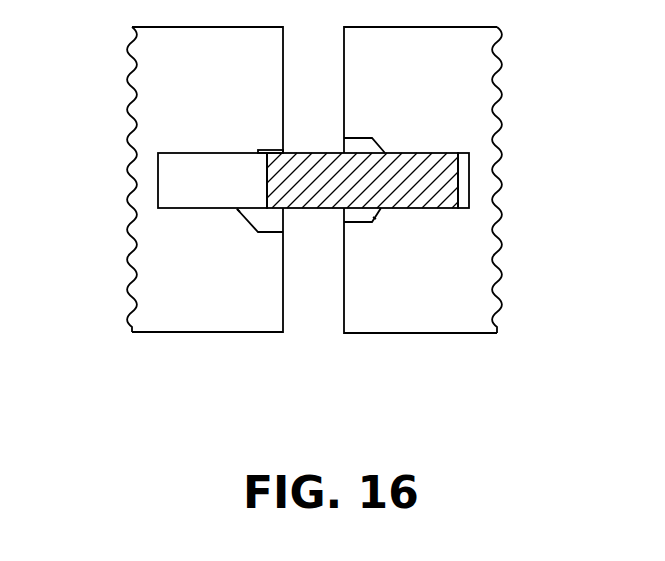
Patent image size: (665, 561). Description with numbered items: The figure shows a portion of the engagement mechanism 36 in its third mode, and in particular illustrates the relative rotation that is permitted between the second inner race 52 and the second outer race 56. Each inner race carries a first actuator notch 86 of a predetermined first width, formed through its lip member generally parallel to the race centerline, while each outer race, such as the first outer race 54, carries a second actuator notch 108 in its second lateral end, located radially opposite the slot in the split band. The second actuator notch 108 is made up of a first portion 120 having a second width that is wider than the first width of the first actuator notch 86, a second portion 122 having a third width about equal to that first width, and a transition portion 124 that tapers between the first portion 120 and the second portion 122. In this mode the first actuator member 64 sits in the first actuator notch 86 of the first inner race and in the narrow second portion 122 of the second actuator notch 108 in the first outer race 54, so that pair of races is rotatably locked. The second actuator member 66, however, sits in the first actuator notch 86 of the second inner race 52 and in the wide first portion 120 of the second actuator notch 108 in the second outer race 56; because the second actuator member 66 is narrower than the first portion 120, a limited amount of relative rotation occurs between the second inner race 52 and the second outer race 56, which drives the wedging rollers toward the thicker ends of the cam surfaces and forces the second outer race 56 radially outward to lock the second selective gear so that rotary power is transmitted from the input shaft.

The engagement mechanism 36 is at (317, 205).
The second inner race 52 is at (282, 227).
The first outer race 54 is at (474, 317).
The second outer race 56 is at (163, 318).
The first actuator member 64 is at (428, 178).
The second actuator member 66 is at (283, 180).
The first actuator notch 86 is at (175, 188).
The second actuator notch 108 is at (364, 142).
The first portion 120 is at (267, 152).
The second portion 122 is at (459, 183).
The transition portion 124 is at (240, 218).